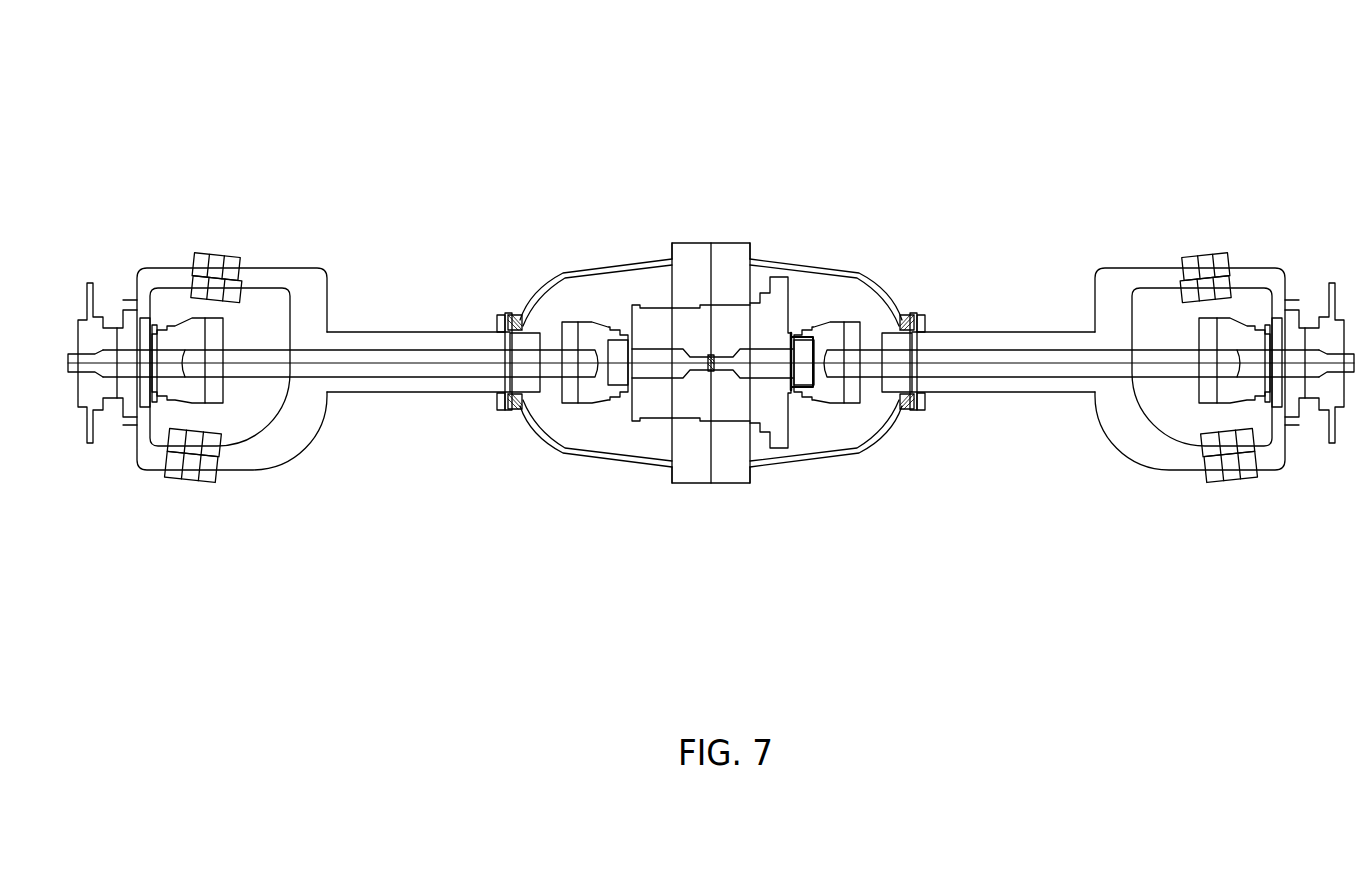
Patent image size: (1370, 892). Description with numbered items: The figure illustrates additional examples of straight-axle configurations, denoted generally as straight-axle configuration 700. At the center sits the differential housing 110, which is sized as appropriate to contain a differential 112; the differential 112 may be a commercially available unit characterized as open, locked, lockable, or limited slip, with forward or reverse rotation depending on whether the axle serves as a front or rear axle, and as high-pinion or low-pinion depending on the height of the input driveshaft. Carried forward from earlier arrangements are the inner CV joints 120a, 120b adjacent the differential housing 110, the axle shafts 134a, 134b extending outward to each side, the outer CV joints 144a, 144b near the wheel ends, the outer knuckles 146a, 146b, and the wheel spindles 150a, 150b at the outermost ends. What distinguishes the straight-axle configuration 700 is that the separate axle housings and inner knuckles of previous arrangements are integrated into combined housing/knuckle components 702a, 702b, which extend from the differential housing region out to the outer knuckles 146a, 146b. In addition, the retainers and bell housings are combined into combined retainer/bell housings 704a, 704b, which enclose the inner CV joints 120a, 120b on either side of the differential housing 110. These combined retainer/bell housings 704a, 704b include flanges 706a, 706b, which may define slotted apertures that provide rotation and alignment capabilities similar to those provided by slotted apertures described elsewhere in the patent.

The straight-axle configuration 700 is at (884, 78).
The differential housing 110 is at (711, 483).
The differential 112 is at (658, 335).
The inner CV joint 120a is at (832, 332).
The inner CV joint 120b is at (595, 333).
The axle shaft 134a is at (1014, 358).
The axle shaft 134b is at (428, 357).
The outer CV joint 144a is at (1223, 337).
The outer CV joint 144b is at (193, 388).
The outer knuckle 146a is at (1277, 460).
The outer knuckle 146b is at (155, 270).
The wheel spindle 150a is at (1323, 343).
The wheel spindle 150b is at (113, 310).
The combined housing/knuckle component 702a is at (1107, 290).
The combined housing/knuckle component 702b is at (291, 272).
The combined retainer/bell housing 704a is at (873, 450).
The combined retainer/bell housing 704b is at (532, 435).
The flange 706a is at (752, 482).
The flange 706b is at (672, 482).